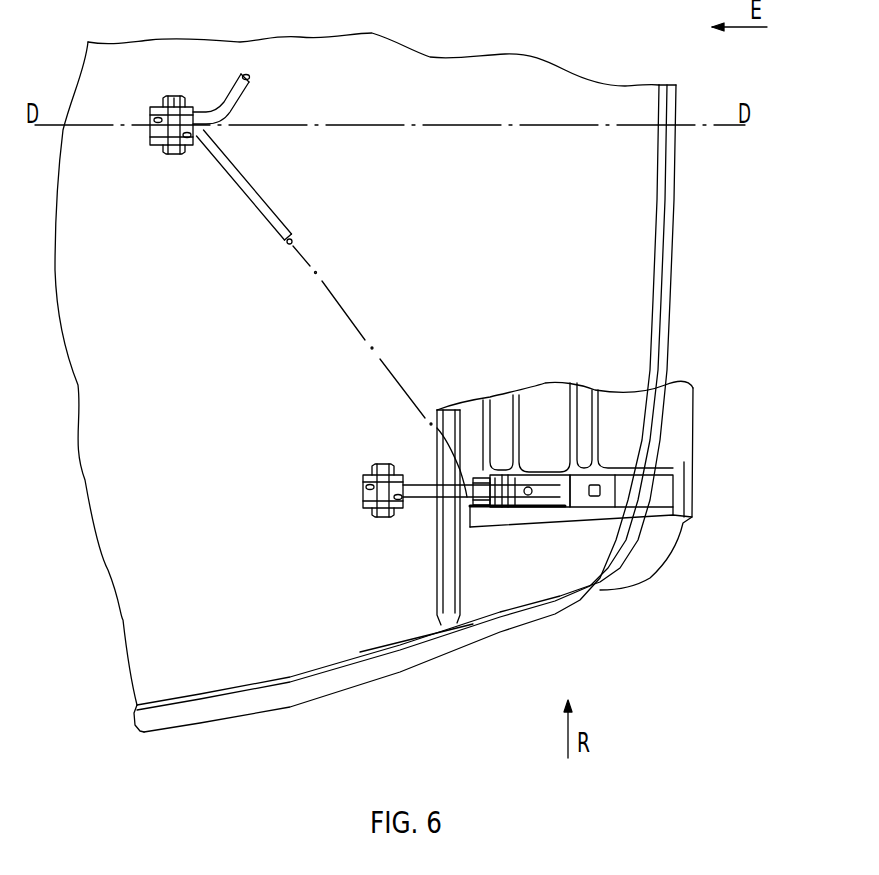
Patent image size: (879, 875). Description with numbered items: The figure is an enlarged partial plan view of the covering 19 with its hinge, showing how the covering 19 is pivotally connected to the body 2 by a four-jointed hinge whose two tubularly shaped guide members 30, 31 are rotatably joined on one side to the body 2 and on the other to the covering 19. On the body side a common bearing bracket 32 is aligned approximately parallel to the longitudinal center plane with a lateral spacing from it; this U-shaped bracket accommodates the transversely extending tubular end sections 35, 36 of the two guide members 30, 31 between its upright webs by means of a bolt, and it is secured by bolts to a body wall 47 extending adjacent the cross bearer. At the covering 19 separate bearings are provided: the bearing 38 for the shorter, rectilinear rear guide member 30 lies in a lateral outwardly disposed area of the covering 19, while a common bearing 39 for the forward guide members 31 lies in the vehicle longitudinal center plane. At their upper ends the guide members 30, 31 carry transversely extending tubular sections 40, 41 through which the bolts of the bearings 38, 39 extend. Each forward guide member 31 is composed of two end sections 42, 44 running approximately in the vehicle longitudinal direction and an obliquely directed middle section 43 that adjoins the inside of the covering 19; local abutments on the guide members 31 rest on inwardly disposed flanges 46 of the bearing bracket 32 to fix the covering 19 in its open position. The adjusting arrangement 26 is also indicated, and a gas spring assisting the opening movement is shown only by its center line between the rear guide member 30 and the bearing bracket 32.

The body 2 is at (694, 431).
The covering 19 is at (626, 93).
The adjusting device 26 is at (390, 453).
The guide member 30 is at (423, 500).
The guide member 31 is at (240, 82).
The bearing bracket 32 is at (584, 520).
The tubular end section 35 is at (557, 510).
The tubular end section 36 is at (500, 512).
The bearing 38 is at (361, 496).
The bearing 39 is at (150, 127).
The tubular section 40 is at (370, 512).
The tubular section 41 is at (178, 106).
The end section 42 is at (478, 505).
The middle section 43 is at (345, 307).
The end section 44 is at (190, 147).
The flange 46 is at (509, 479).
The body wall 47 is at (552, 398).